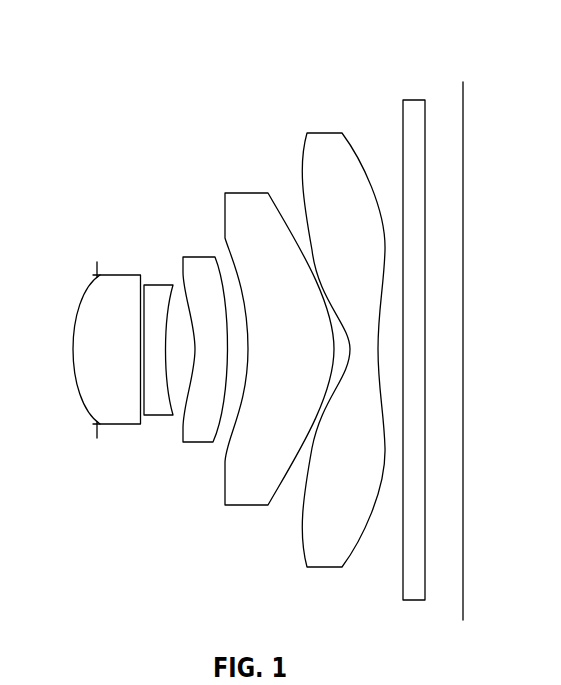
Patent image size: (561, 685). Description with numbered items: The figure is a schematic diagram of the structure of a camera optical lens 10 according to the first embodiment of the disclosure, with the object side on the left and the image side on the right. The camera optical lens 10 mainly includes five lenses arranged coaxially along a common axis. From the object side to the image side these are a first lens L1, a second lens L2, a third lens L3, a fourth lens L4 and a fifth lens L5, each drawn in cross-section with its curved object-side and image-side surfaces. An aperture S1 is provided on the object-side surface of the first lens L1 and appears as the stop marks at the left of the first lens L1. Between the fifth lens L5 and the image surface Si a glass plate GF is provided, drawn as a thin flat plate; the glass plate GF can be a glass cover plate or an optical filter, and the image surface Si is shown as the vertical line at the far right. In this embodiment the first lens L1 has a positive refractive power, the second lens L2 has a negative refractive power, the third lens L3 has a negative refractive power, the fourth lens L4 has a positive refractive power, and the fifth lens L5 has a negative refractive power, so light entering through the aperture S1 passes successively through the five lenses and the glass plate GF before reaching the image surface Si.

The camera optical lens 10 is at (250, 33).
The aperture S1 is at (77, 348).
The first lens L1 is at (107, 331).
The second lens L2 is at (159, 335).
The third lens L3 is at (205, 334).
The fourth lens L4 is at (279, 334).
The fifth lens L5 is at (343, 335).
The glass plate GF is at (416, 335).
The image surface Si is at (465, 333).